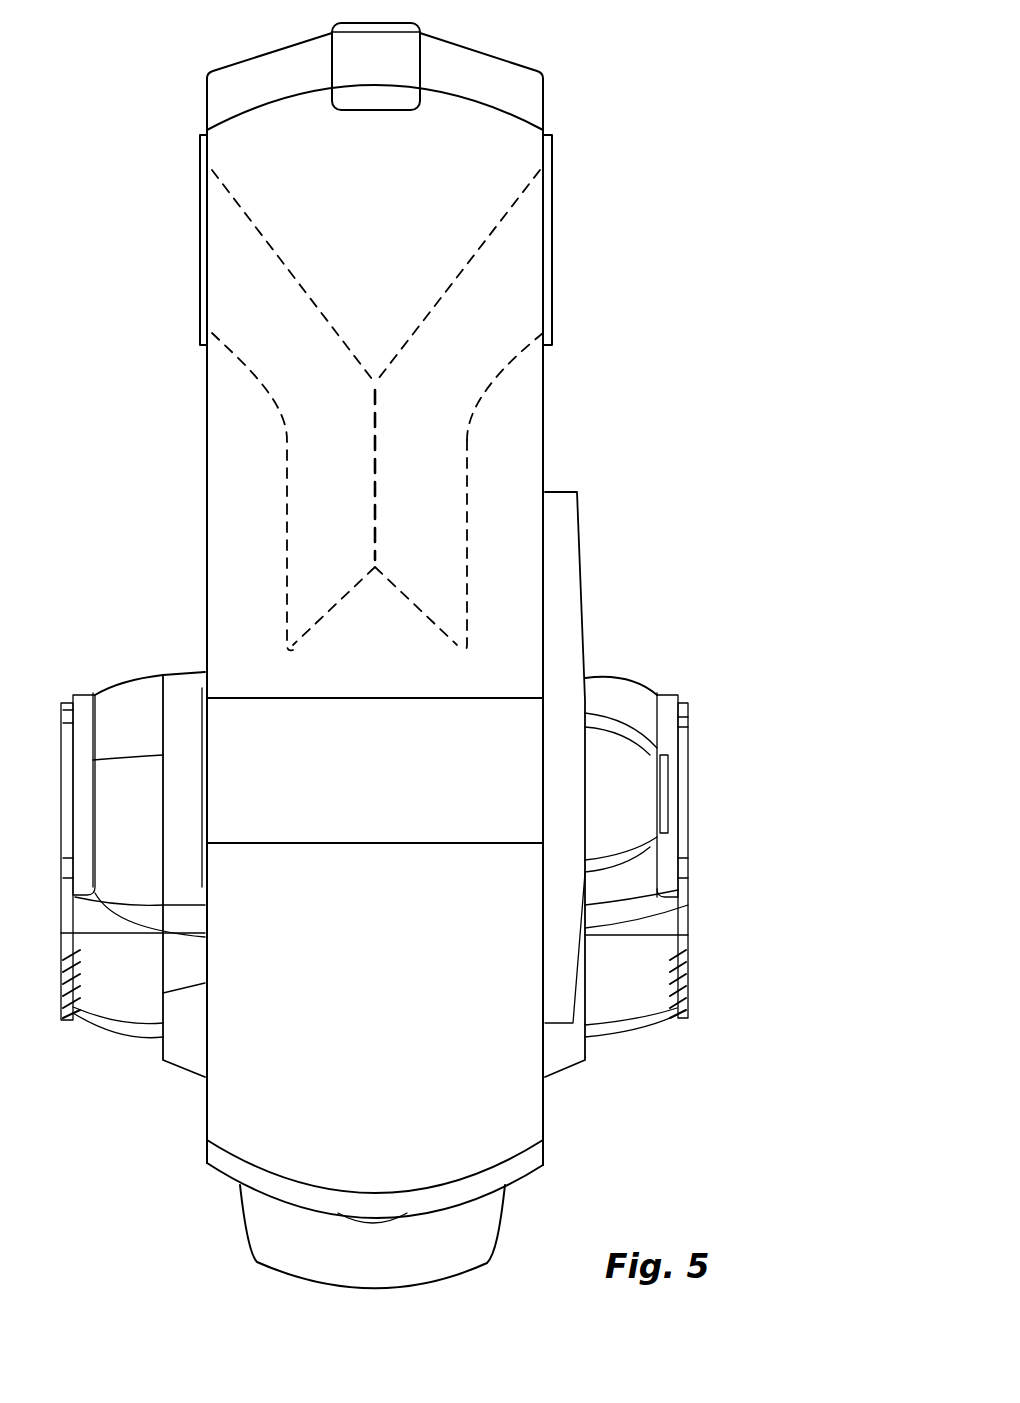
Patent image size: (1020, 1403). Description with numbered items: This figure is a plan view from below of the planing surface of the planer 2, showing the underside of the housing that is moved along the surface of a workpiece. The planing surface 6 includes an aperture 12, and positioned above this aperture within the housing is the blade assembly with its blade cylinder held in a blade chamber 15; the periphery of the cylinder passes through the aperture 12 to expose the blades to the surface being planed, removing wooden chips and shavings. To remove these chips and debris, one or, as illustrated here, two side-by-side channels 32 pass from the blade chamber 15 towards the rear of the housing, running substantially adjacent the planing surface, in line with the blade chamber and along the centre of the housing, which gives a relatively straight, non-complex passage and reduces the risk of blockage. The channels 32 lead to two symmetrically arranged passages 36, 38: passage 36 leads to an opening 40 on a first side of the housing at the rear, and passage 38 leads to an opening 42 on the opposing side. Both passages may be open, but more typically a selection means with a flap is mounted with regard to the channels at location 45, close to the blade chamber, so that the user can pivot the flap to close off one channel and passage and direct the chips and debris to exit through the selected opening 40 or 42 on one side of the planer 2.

The planer 2 is at (588, 548).
The planing surface 6 is at (498, 378).
The aperture 12 is at (478, 828).
The blade chamber 15 is at (475, 765).
The channels 32 is at (305, 472).
The passage 36 is at (260, 313).
The passage 38 is at (505, 298).
The opening 40 is at (200, 247).
The opening 42 is at (560, 210).
The location 45 is at (375, 563).